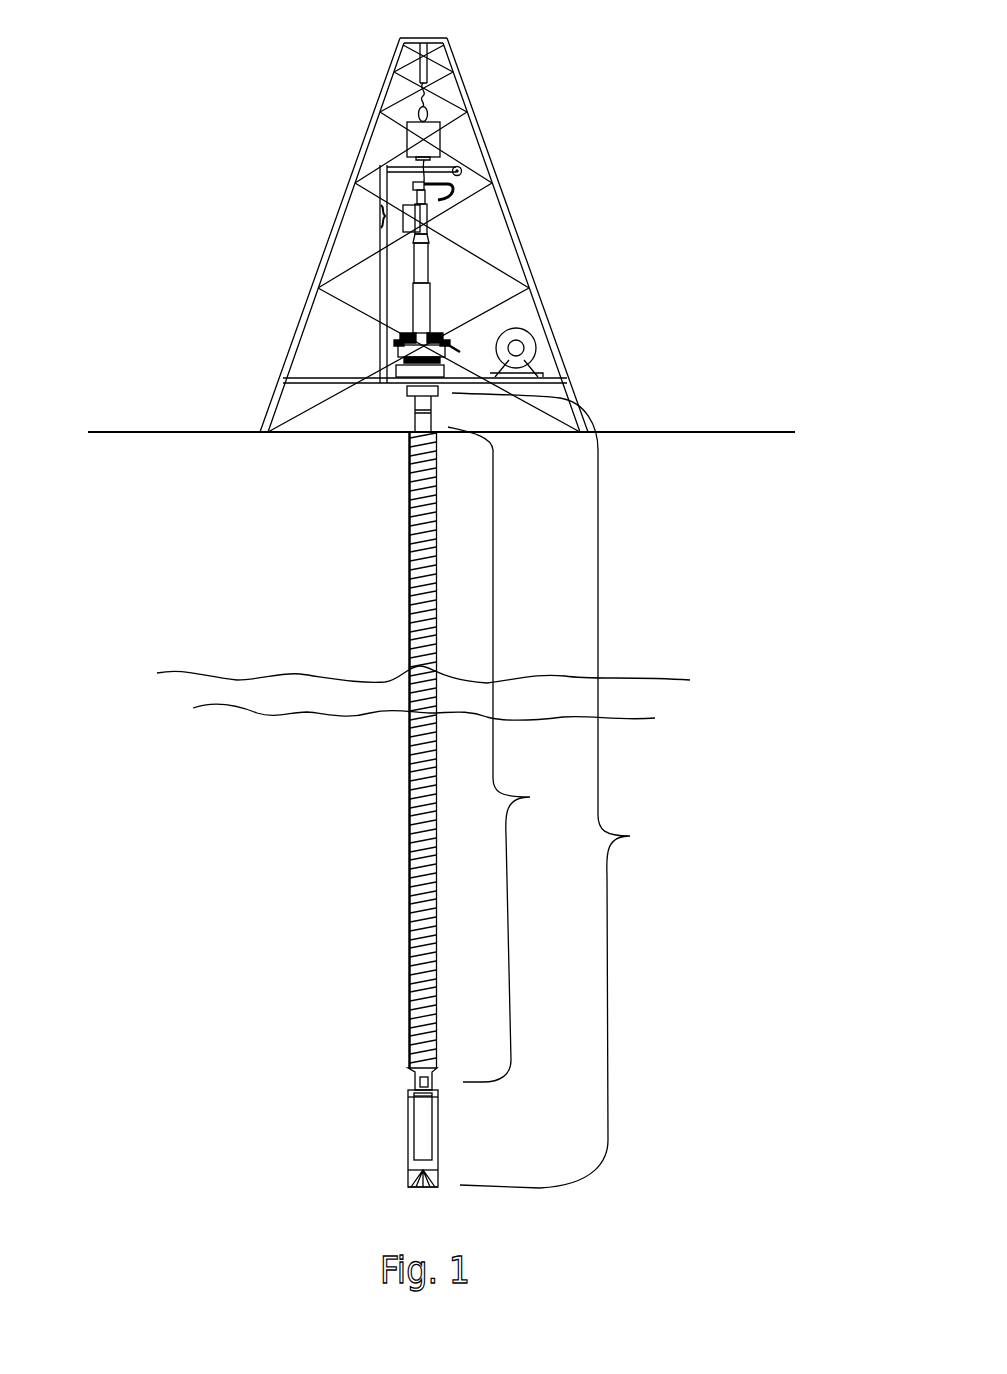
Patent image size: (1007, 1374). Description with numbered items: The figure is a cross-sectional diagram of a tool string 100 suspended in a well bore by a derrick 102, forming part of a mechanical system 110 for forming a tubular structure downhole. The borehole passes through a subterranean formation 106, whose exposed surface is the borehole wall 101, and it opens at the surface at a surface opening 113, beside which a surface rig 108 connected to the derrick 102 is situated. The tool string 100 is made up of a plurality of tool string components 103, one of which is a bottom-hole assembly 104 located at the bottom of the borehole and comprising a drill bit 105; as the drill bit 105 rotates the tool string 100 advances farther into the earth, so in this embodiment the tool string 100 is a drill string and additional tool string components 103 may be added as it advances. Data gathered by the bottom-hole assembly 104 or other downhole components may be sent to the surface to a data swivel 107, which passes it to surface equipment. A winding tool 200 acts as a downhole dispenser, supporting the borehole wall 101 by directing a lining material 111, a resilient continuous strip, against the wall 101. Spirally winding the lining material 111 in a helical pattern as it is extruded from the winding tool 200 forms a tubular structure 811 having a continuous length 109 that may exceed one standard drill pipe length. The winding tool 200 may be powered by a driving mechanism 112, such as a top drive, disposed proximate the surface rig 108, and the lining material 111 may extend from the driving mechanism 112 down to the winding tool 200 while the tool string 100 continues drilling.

The mechanical system 110 is at (186, 62).
The derrick 102 is at (332, 232).
The lining material 111 is at (487, 232).
The data swivel 107 is at (440, 140).
The driving mechanism 112 is at (425, 262).
The surface rig 108 is at (600, 375).
The surface opening 113 is at (376, 414).
The formation 106 is at (339, 762).
The tool string 100 is at (563, 790).
The continuous length 109 is at (510, 754).
The borehole wall 101 is at (412, 965).
The tubular structure 811 is at (420, 592).
The tool string component 103 is at (413, 1068).
The bottom-hole assembly 104 is at (398, 1126).
The winding tool 200 is at (454, 1102).
The drill bit 105 is at (455, 1200).